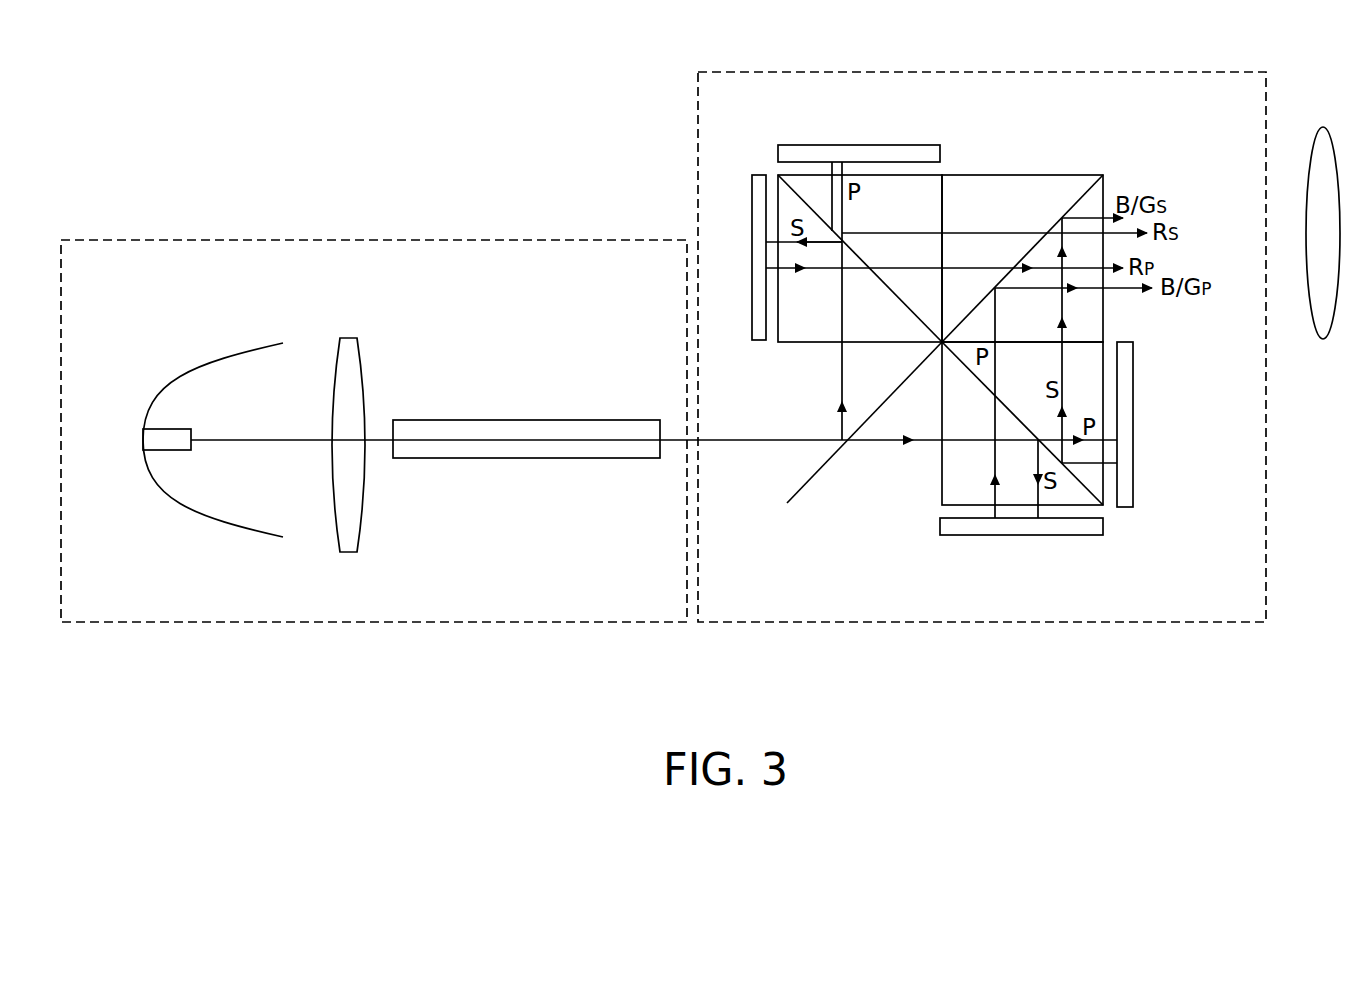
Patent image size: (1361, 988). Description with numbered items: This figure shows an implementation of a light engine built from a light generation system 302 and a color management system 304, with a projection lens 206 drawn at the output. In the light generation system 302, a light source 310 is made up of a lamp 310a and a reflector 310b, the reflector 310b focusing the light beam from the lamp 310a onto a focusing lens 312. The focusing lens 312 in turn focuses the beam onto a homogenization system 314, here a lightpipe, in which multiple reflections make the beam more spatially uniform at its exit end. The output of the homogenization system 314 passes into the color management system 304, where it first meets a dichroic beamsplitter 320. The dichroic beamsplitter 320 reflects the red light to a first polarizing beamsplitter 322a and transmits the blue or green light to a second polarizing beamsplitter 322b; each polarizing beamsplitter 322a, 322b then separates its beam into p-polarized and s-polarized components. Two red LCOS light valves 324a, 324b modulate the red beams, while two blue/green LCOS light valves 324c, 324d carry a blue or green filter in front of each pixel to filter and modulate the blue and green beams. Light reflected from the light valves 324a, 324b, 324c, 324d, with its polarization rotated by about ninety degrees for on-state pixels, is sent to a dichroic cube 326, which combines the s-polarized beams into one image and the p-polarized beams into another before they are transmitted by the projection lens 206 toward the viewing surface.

The light generation system 302 is at (374, 450).
The color management system 304 is at (985, 366).
The light source 310 is at (180, 440).
The lamp 310a is at (177, 429).
The reflector 310b is at (200, 368).
The focusing lens 312 is at (346, 405).
The homogenization system 314 is at (526, 486).
The dichroic beamsplitter 320 is at (808, 486).
The first polarizing beamsplitter 322a is at (806, 371).
The second polarizing beamsplitter 322b is at (942, 493).
The red LCOS light valve 324a is at (752, 174).
The red LCOS light valve 324b is at (847, 145).
The blue/green LCOS light valve 324c is at (1133, 408).
The blue/green LCOS light valve 324d is at (1027, 536).
The dichroic cube 326 is at (1013, 204).
The projection lens 206 is at (1277, 184).